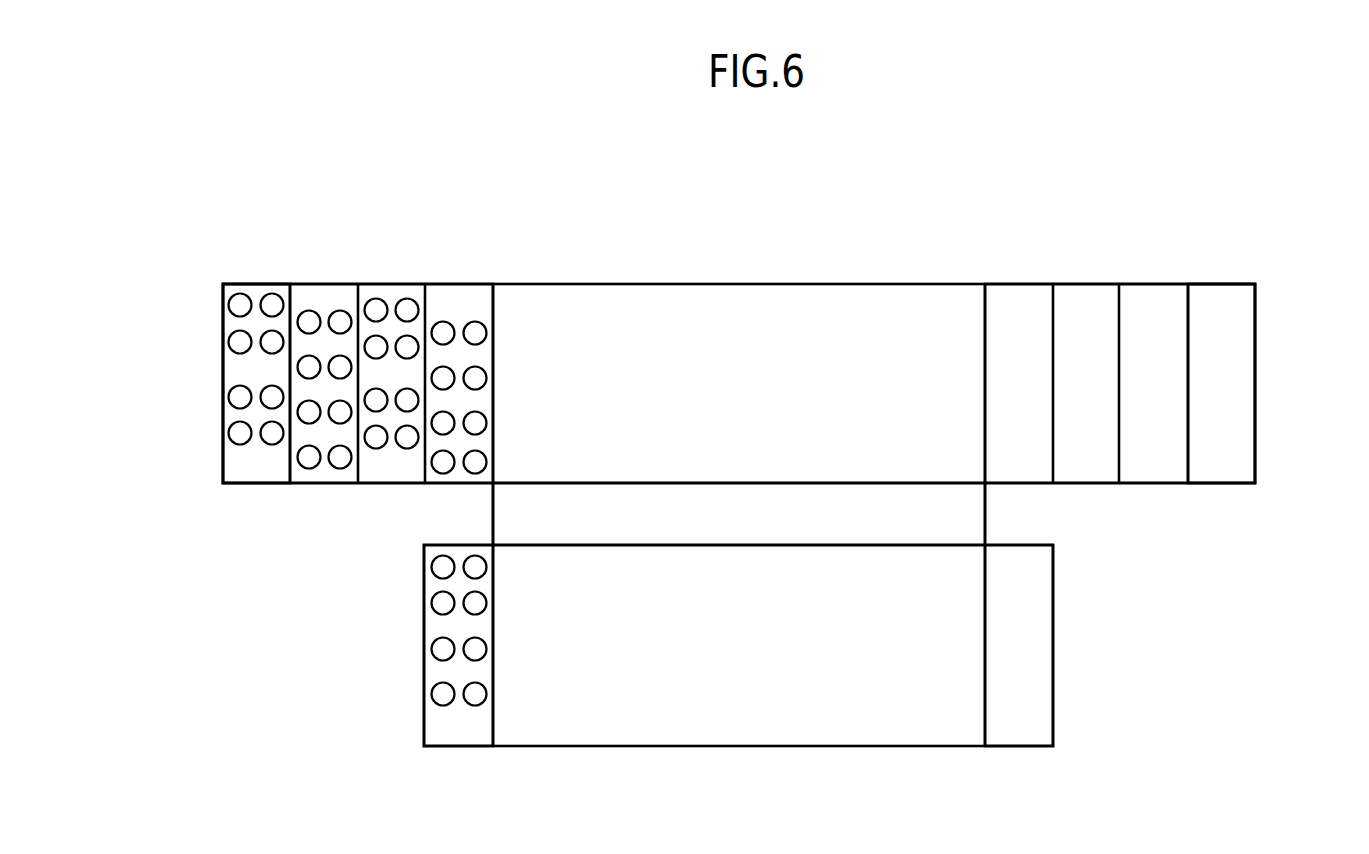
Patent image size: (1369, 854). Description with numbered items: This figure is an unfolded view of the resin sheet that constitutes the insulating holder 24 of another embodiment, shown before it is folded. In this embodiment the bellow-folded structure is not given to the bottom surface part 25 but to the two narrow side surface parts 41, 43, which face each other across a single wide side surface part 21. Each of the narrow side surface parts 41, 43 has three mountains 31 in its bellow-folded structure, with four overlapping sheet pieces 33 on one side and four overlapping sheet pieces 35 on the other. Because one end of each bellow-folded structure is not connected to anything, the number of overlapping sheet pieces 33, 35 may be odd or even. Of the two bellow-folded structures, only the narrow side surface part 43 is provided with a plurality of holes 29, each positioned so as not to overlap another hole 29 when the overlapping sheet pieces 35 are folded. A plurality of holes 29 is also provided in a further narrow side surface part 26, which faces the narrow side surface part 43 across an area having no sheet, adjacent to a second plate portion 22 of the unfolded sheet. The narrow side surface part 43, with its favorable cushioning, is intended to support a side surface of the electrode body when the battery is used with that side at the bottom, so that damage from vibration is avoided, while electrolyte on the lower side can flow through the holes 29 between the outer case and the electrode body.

The wide side surface part 21 is at (747, 292).
The second plate portion 22 is at (1033, 660).
The insulating holder 24 is at (937, 250).
The bottom surface part 25 is at (963, 509).
The narrow side surface part 26 is at (430, 740).
The holes 29 is at (475, 463).
The mountains 31 is at (425, 278).
The overlapping sheet pieces 33 is at (1213, 475).
The overlapping sheet pieces 35 is at (467, 285).
The narrow side surface part 41 is at (1288, 403).
The narrow side surface part 43 is at (188, 403).